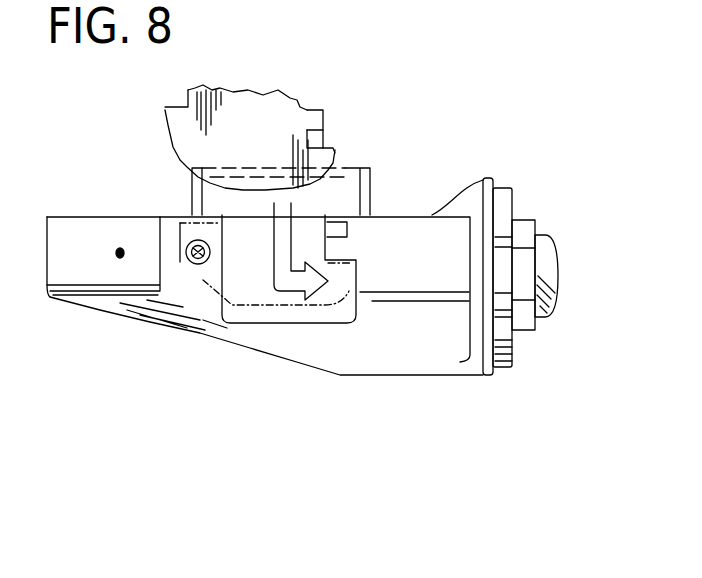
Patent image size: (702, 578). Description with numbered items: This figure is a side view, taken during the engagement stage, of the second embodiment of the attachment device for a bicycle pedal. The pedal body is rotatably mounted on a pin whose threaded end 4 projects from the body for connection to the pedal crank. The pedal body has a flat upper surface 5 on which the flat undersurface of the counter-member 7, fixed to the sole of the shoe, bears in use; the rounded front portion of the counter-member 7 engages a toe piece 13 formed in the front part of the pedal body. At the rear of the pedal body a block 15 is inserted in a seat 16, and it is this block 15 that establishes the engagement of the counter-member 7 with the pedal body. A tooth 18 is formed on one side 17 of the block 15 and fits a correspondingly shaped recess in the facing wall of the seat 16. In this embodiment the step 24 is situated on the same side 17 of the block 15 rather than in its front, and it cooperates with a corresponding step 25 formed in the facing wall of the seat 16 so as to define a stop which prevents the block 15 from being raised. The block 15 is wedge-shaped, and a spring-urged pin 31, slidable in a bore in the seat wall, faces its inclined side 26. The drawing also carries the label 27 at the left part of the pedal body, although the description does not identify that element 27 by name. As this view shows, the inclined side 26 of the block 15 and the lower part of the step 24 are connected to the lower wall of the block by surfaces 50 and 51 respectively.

The threaded end 4 is at (548, 257).
The flat upper surface 5 is at (440, 217).
The counter-member 7 is at (228, 577).
The toe piece 13 is at (413, 210).
The block 15 is at (253, 113).
The seat 16 is at (268, 290).
The side 17 is at (323, 113).
The tooth 18 is at (327, 130).
The step 24 is at (333, 152).
The step 25 is at (332, 243).
The inclined side 26 is at (168, 114).
The bracket 27 is at (169, 233).
The pin 31 is at (203, 280).
The surface 50 is at (176, 163).
The surface 51 is at (367, 197).